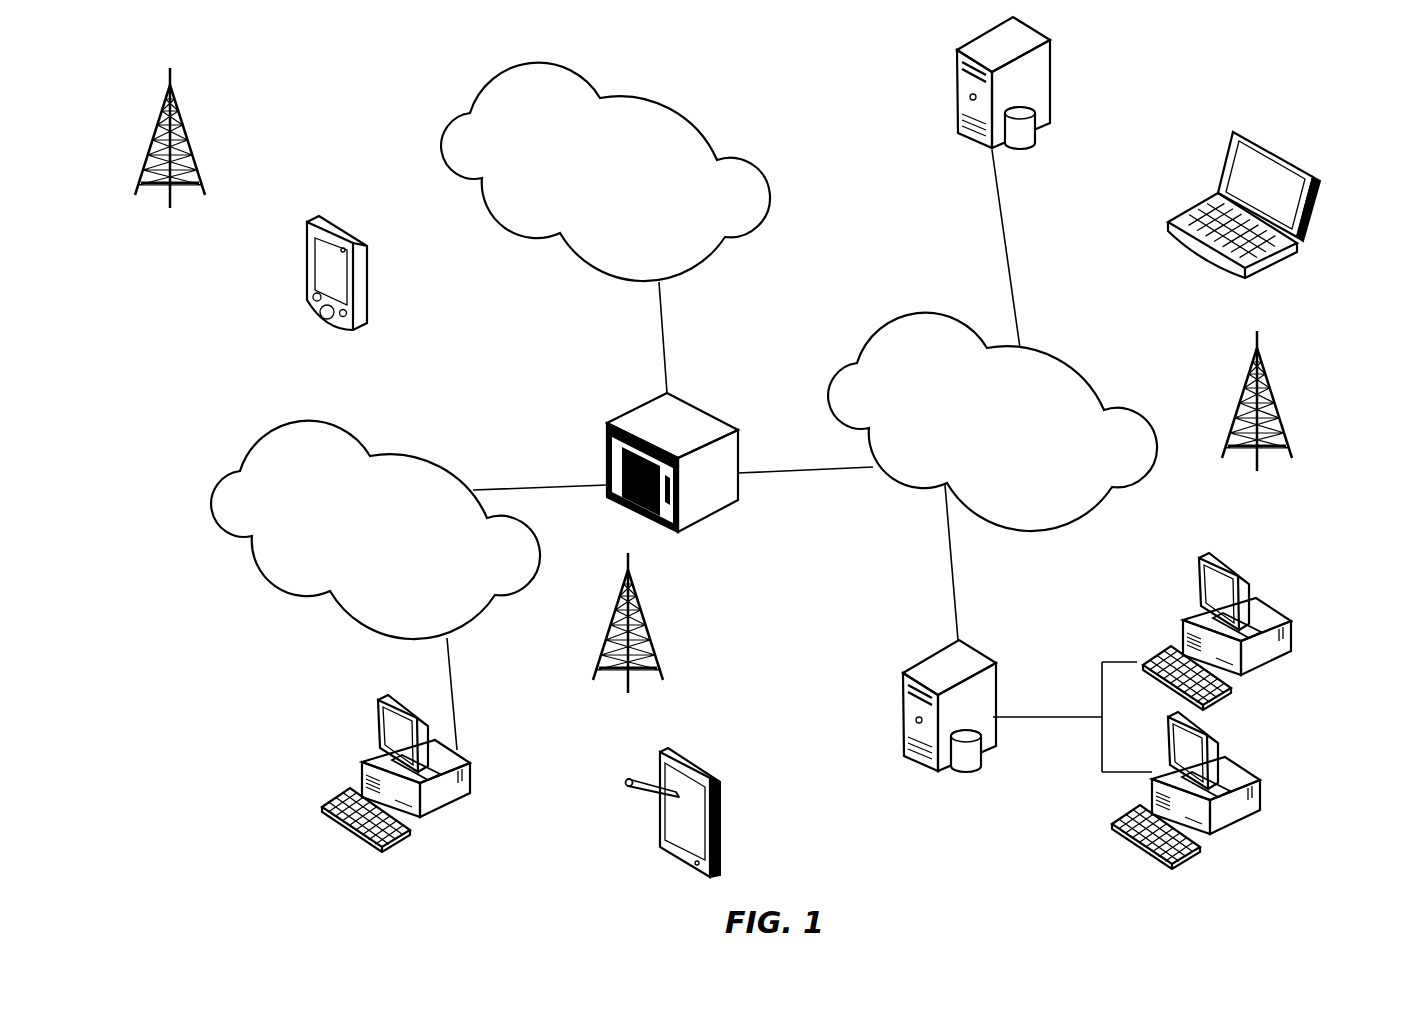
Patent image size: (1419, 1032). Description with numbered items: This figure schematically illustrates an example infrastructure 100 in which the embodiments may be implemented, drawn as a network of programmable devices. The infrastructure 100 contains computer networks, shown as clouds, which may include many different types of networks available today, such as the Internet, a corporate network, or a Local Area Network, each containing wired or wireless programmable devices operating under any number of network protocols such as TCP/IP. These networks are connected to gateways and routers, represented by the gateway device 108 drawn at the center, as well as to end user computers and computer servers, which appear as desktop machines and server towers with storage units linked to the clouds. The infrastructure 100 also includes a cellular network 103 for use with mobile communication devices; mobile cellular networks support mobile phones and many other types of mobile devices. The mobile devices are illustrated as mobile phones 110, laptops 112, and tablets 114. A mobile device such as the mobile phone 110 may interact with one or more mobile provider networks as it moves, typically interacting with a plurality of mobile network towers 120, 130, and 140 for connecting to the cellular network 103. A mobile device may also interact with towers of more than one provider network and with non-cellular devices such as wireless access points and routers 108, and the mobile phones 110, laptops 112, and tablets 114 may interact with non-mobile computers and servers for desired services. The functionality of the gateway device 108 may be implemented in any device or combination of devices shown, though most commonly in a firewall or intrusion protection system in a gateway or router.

The infrastructure 100 is at (1152, 115).
The cellular network 103 is at (655, 103).
The gateways and routers 108 is at (697, 407).
The mobile phones 110 is at (342, 228).
The laptops 112 is at (1288, 158).
The tablets 114 is at (702, 763).
The mobile network tower 120 is at (628, 639).
The mobile network tower 130 is at (1257, 417).
The mobile network tower 140 is at (170, 154).